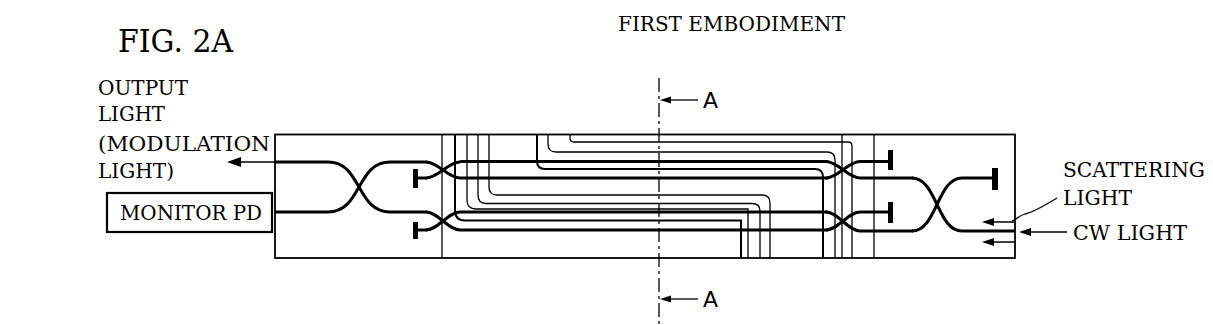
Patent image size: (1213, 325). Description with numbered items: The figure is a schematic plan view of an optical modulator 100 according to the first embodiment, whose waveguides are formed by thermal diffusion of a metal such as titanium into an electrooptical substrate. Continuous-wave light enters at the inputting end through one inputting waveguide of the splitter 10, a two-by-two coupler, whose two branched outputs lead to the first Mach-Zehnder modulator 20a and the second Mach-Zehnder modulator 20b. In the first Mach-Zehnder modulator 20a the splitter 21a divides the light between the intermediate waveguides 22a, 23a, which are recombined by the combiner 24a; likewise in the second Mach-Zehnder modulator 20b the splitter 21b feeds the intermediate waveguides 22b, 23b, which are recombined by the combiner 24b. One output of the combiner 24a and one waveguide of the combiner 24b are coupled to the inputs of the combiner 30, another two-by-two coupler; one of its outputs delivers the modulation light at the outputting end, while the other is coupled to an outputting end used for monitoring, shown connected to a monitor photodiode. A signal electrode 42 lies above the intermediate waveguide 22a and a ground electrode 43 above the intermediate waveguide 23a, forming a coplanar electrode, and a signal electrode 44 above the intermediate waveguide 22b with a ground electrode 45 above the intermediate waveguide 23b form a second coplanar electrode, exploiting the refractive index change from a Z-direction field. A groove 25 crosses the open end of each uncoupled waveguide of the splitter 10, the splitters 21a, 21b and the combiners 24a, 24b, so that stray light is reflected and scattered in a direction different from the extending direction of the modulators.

The optical modulator 100 is at (1065, 80).
The splitter 10 is at (944, 222).
The first Mach-Zehnder modulator 20a is at (644, 115).
The second Mach-Zehnder modulator 20b is at (650, 265).
The splitter 21a is at (868, 150).
The splitter 21b is at (863, 228).
The intermediate waveguide 22a is at (526, 163).
The intermediate waveguide 22b is at (806, 218).
The intermediate waveguide 23a is at (502, 170).
The intermediate waveguide 23b is at (780, 233).
The combiner 24a is at (433, 158).
The combiner 24b is at (425, 237).
The groove 25 is at (412, 180).
The combiner 30 is at (350, 163).
The signal electrode 42 is at (555, 147).
The ground electrode 43 is at (518, 142).
The signal electrode 44 is at (472, 138).
The ground electrode 45 is at (536, 243).